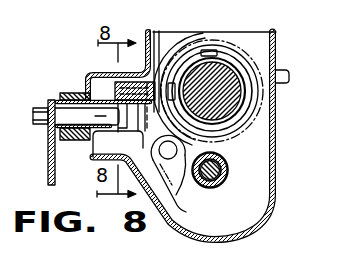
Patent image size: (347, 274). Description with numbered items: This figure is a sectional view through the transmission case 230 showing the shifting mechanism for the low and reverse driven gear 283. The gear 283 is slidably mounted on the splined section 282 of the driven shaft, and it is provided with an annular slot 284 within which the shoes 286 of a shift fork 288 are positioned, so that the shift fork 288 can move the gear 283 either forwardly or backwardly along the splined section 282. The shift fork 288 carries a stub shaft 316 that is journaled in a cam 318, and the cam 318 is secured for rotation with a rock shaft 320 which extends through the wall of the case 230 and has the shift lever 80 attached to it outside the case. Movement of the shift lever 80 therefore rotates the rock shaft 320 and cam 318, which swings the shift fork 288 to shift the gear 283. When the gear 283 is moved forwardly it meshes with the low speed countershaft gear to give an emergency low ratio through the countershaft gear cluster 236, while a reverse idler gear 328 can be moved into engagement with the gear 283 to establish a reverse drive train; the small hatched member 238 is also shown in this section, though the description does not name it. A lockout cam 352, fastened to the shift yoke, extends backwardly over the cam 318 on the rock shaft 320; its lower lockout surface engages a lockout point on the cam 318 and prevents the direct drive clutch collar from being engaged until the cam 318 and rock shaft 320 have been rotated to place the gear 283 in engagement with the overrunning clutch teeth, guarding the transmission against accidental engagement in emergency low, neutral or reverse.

The shift lever 80 is at (44, 183).
The case 230 is at (243, 232).
The countershaft gear cluster 236 is at (218, 181).
The bushing 238 is at (228, 169).
The splined section 282 is at (224, 101).
The low and reverse driven gear 283 is at (247, 62).
The annular slot 284 is at (227, 141).
The shoes 286 is at (216, 50).
The shift fork 288 is at (199, 47).
The stub shaft 316 is at (121, 69).
The cam 318 is at (88, 94).
The rock shaft 320 is at (120, 120).
The reverse idler gear 328 is at (173, 199).
The lockout cam 352 is at (146, 34).